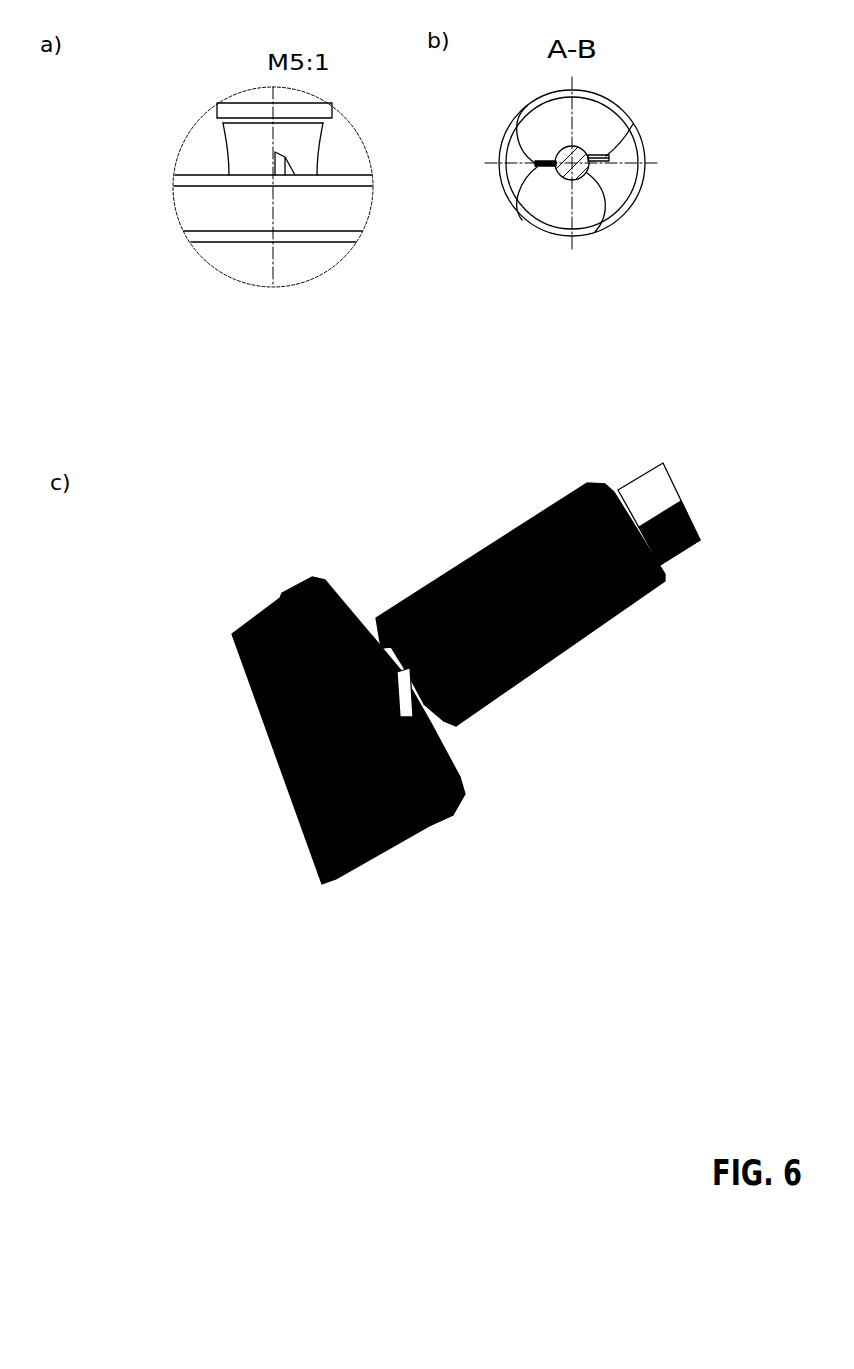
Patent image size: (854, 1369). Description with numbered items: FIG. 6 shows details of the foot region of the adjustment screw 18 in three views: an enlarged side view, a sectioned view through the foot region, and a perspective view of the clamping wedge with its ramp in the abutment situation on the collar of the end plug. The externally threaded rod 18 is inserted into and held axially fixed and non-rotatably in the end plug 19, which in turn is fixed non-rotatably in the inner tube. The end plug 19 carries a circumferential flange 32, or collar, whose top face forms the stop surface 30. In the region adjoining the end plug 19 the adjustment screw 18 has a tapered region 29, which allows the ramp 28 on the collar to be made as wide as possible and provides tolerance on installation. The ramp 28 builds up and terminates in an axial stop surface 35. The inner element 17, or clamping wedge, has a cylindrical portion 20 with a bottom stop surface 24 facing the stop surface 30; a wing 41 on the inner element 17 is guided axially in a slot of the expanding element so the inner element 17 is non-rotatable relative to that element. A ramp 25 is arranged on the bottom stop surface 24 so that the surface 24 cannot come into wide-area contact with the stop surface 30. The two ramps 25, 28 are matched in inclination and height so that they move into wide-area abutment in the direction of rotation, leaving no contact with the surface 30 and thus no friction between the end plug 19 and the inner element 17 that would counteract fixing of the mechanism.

The inner element 17 is at (421, 536).
The externally threaded rod 18 is at (318, 110).
The end plug 19 is at (235, 253).
The cylindrical portion 20 is at (584, 646).
The bottom stop surface 24 is at (443, 724).
The ramp 25 is at (379, 640).
The ramp on the collar of the end plug 28 is at (285, 170).
The tapered region 29 is at (320, 143).
The top face of the collar 30 is at (620, 173).
The circumferential flange 32 is at (355, 210).
The axial stop surface of the ramp on the collar 35 is at (273, 162).
The wing 41 is at (523, 524).